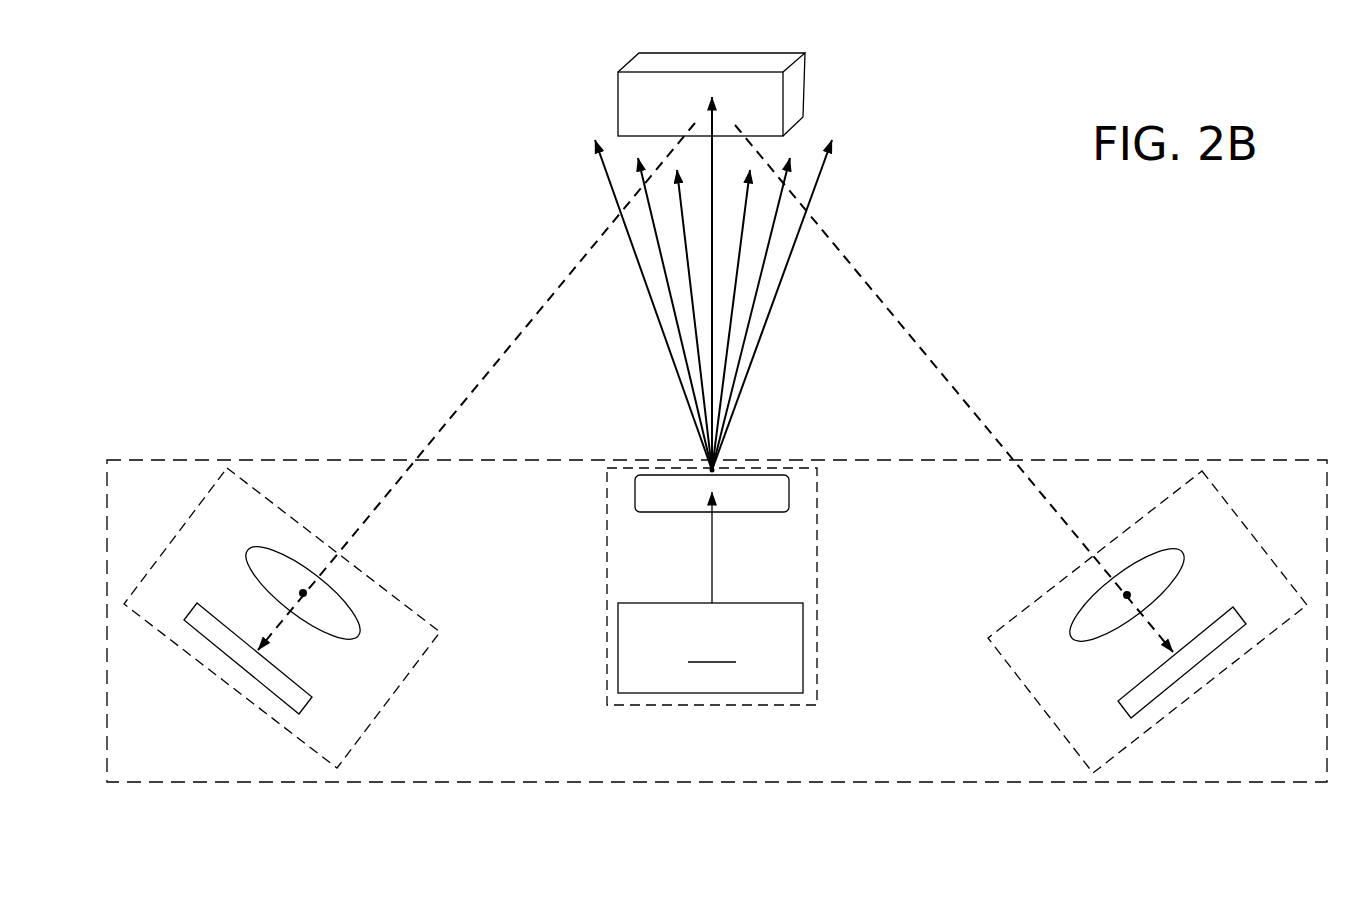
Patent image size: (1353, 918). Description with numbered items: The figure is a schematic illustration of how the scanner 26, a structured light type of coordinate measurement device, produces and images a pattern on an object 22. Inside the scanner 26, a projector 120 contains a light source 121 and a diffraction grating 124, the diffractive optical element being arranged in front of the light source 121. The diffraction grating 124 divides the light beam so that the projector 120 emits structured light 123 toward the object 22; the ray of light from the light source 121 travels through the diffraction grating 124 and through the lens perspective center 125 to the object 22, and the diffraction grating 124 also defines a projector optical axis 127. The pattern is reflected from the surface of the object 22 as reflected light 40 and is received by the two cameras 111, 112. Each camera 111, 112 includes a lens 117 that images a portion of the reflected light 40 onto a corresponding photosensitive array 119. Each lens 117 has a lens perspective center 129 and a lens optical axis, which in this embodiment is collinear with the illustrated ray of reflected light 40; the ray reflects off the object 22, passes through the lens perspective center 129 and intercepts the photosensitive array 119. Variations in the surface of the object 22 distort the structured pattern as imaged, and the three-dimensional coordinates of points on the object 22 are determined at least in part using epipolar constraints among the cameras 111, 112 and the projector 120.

The object 22 is at (620, 83).
The scanner 26 is at (733, 782).
The reflected light 40 is at (537, 313).
The camera 111 is at (1025, 680).
The camera 112 is at (407, 680).
The lens 117 is at (252, 568).
The photosensitive array 119 is at (275, 701).
The projector 120 is at (689, 706).
The light source 121 is at (710, 592).
The structured light 123 is at (648, 352).
The diffraction grating 124 is at (789, 492).
The lens perspective center 125 is at (712, 477).
The projector optical axis 127 is at (713, 304).
The lens perspective center 129 is at (320, 592).